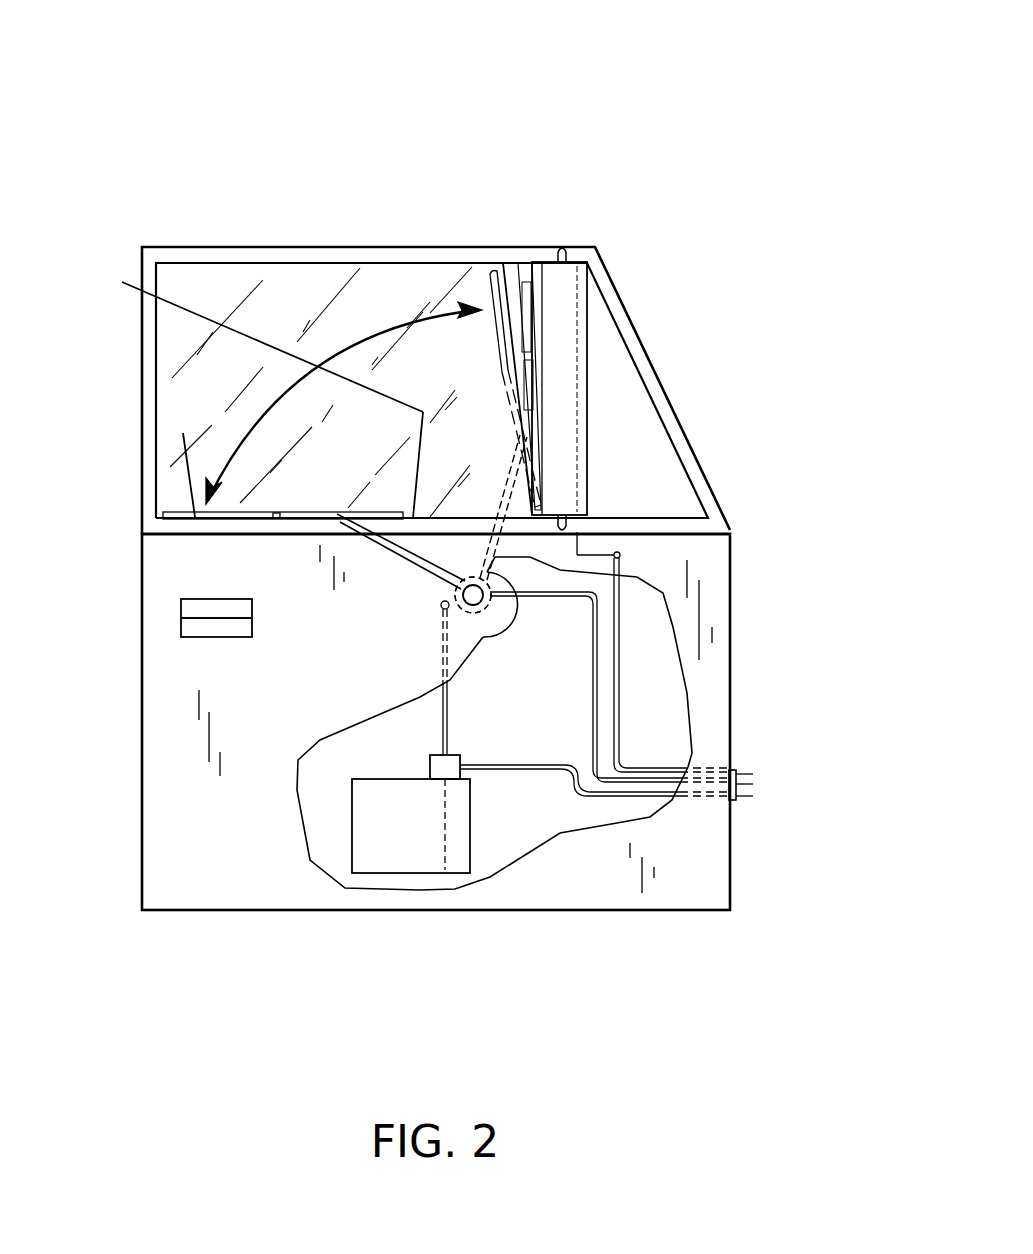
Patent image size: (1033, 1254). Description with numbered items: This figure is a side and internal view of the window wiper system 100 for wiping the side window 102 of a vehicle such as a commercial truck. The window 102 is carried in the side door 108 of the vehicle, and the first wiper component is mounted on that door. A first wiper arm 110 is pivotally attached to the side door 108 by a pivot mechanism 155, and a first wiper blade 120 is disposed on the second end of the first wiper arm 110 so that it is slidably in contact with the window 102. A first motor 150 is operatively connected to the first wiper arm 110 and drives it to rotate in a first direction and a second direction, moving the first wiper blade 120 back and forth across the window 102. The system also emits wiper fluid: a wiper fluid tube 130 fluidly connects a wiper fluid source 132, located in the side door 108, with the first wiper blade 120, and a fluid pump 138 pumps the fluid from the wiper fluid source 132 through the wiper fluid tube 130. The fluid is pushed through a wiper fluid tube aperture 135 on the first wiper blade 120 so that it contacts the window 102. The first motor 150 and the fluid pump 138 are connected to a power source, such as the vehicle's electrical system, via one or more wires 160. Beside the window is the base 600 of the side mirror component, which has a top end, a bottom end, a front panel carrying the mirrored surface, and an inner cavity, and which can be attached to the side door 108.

The window wiper system 100 is at (683, 132).
The side window 102 is at (297, 293).
The side door 108 is at (212, 810).
The first wiper arm 110 is at (300, 573).
The first wiper blade 120 is at (183, 433).
The wiper fluid tube 130 is at (280, 518).
The wiper fluid source 132 is at (388, 850).
The wiper fluid tube aperture 135 is at (440, 607).
The fluid pump 138 is at (303, 881).
The first motor 150 is at (490, 602).
The pivot mechanism 155 is at (490, 602).
The wires 160 is at (620, 557).
The base 600 is at (565, 372).